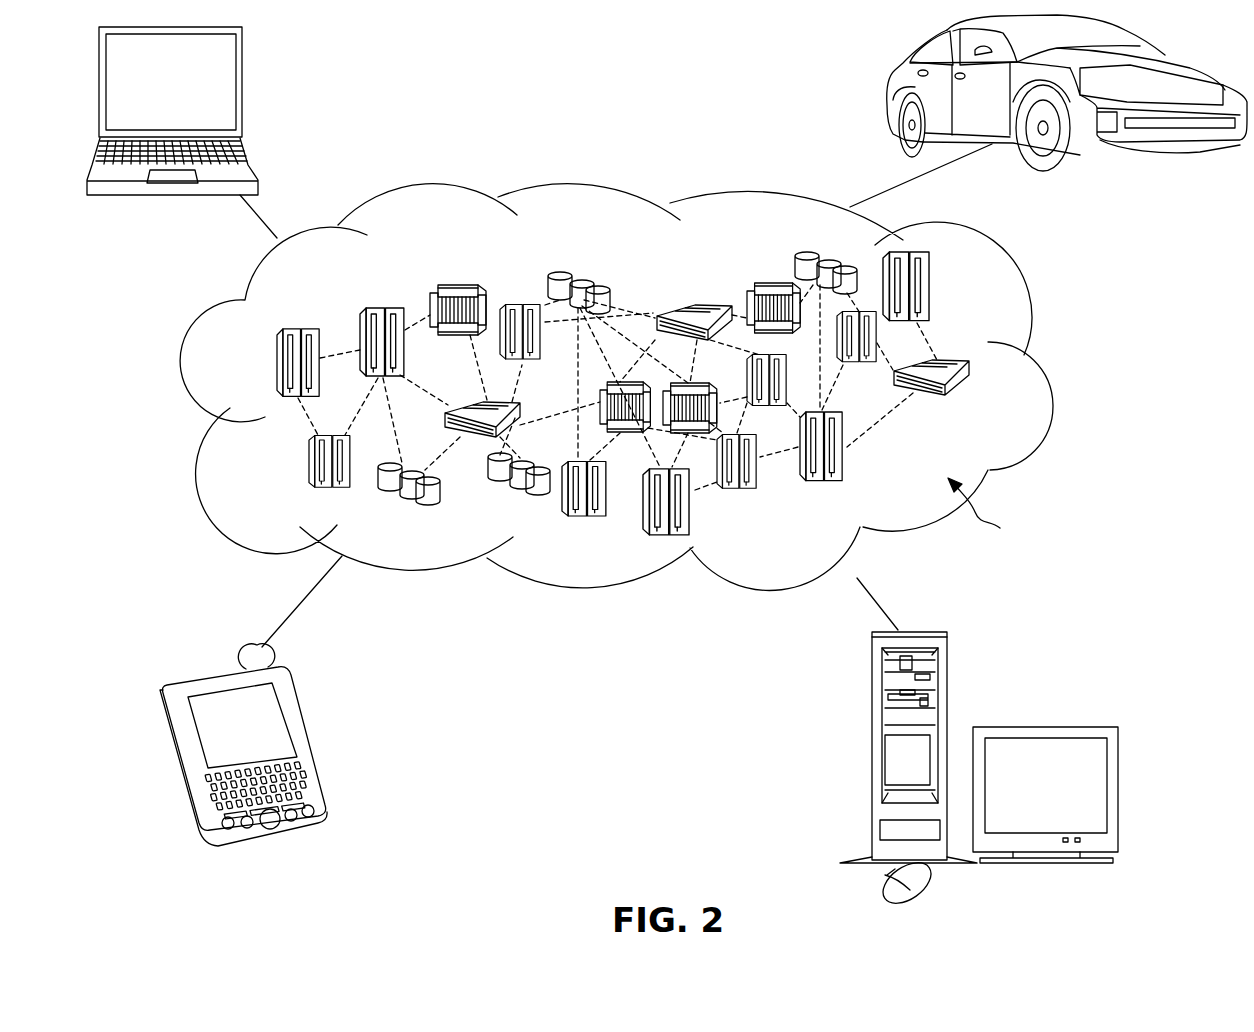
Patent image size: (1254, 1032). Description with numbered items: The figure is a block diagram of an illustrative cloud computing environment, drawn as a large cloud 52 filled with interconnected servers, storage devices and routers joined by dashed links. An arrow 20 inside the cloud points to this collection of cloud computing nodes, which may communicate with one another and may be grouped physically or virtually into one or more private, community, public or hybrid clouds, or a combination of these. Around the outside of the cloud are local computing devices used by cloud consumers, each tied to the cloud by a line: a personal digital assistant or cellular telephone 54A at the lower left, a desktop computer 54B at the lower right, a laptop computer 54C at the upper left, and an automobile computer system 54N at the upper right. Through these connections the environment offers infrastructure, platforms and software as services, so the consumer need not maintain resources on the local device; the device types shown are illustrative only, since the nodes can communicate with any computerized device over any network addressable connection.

The cloud computing network / cloud 52 is at (1040, 377).
The cloud computing system / nodes 20 is at (988, 511).
The personal digital assistant or cellular telephone 54A is at (290, 707).
The desktop computer 54B is at (872, 692).
The laptop computer 54C is at (243, 67).
The automobile computer system 54N is at (887, 82).